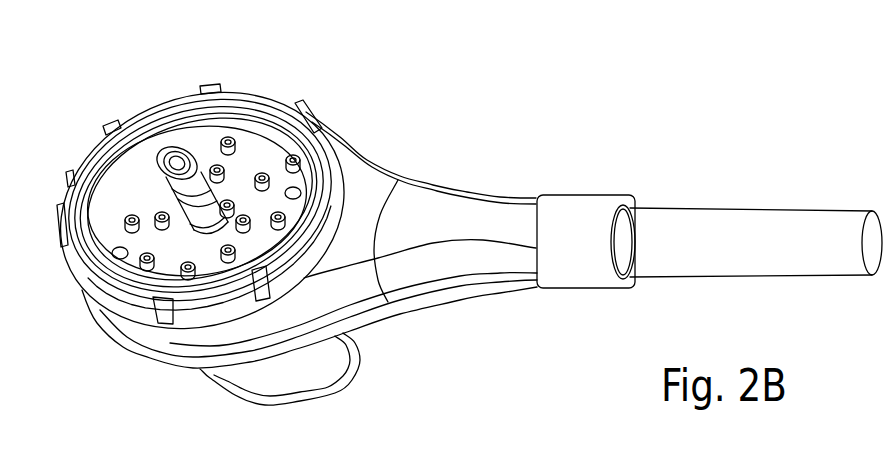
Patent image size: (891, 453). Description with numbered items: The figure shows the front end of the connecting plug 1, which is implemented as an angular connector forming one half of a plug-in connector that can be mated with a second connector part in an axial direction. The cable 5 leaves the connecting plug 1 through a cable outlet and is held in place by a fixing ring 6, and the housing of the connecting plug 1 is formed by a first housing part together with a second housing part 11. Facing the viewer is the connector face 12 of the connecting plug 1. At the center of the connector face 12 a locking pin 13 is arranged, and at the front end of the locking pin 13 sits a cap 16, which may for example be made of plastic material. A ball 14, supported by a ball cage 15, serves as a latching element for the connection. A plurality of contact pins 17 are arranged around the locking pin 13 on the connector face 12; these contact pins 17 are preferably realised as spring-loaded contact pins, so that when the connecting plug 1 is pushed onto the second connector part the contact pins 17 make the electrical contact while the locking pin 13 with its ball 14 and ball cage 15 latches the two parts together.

The connecting plug 1 is at (448, 215).
The cable 5 is at (702, 263).
The fixing ring 6 is at (573, 279).
The second housing part 11 is at (463, 213).
The connector face 12 is at (127, 197).
The locking pin 13 is at (195, 224).
The ball 14 is at (226, 203).
The ball cage 15 is at (233, 140).
The cap 16 is at (160, 175).
The contact pins 17 is at (232, 259).